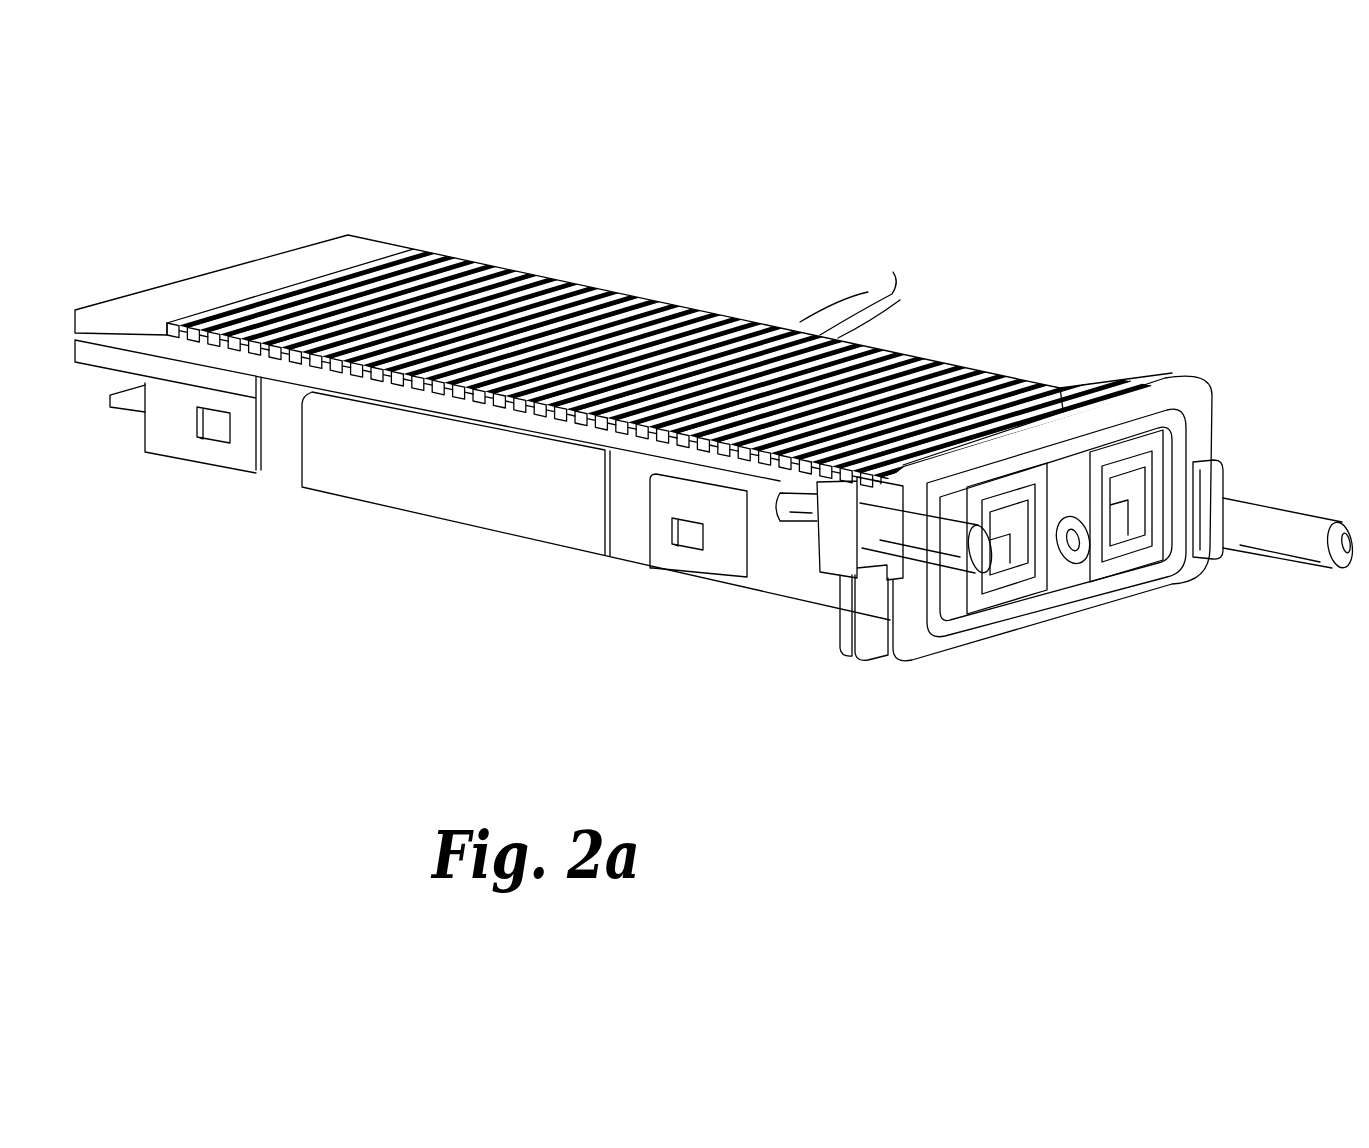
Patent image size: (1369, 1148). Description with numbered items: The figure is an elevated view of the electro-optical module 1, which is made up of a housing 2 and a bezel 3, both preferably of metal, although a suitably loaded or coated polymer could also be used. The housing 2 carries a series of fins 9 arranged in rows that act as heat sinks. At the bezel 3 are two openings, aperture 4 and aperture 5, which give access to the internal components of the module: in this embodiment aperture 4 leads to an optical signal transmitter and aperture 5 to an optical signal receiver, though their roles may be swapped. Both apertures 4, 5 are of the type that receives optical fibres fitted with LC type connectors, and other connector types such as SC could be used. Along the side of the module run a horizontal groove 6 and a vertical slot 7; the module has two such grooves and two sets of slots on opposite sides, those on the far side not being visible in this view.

The electro-optical module 1 is at (652, 284).
The housing 2 is at (375, 478).
The bezel 3 is at (920, 640).
The aperture 4 is at (1003, 577).
The aperture 5 is at (1127, 548).
The horizontal groove 6 is at (130, 350).
The vertical slot 7 is at (500, 256).
The fins 9 is at (850, 296).